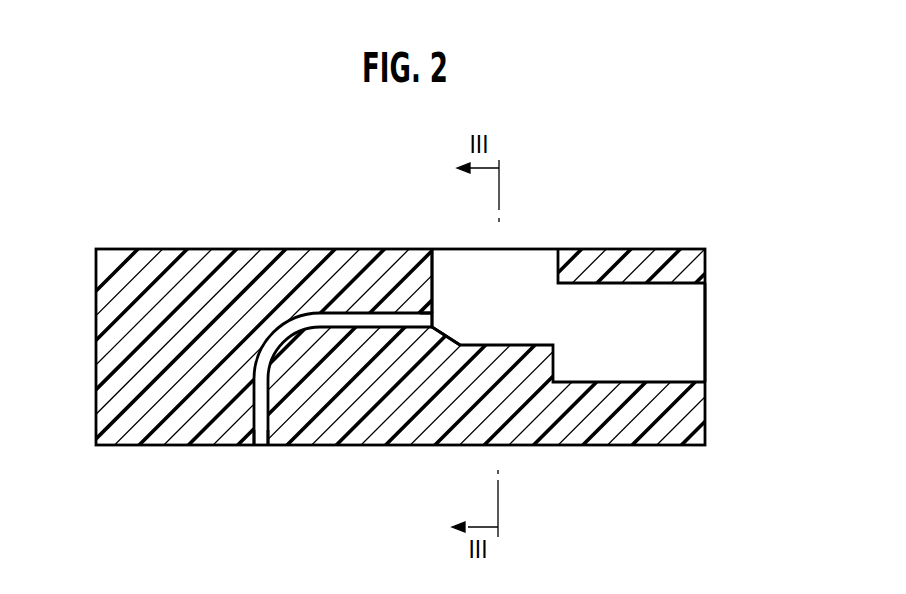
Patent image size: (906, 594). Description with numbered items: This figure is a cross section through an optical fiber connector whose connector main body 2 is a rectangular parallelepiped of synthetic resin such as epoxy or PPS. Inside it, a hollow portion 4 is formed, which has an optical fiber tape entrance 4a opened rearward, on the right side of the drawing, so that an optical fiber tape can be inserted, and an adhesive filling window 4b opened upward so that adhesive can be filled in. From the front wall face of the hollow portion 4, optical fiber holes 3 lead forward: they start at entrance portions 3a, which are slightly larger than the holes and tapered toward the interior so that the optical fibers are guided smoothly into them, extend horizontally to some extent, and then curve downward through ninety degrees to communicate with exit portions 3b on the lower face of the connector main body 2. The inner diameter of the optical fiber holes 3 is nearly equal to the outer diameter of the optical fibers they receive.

The connector main body 2 is at (298, 249).
The optical fiber holes 3 is at (262, 347).
The entrance portions 3a is at (434, 320).
The exit portions 3b is at (258, 446).
The hollow portion 4 is at (535, 249).
The optical fiber tape entrance 4a is at (692, 318).
The adhesive filling window 4b is at (452, 249).